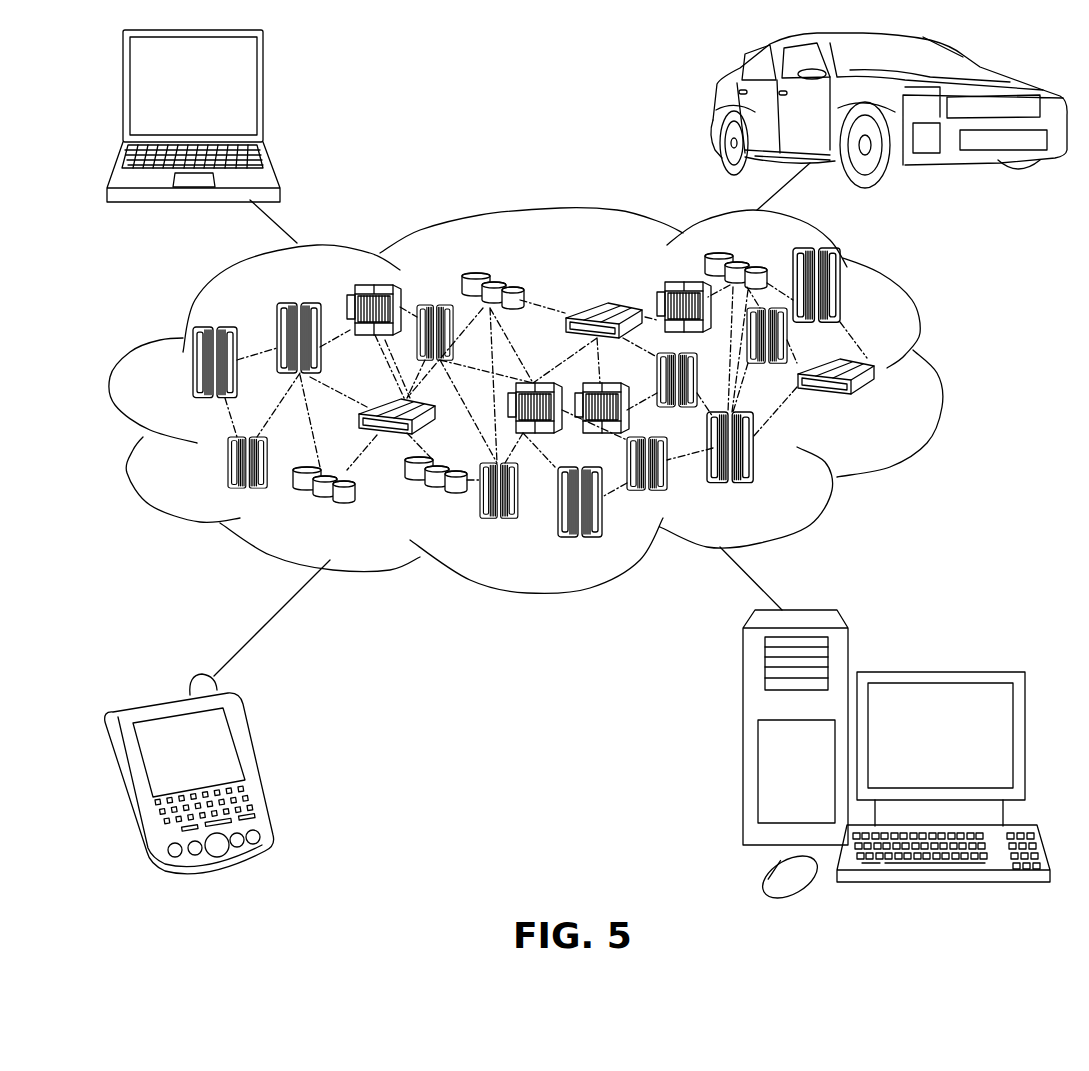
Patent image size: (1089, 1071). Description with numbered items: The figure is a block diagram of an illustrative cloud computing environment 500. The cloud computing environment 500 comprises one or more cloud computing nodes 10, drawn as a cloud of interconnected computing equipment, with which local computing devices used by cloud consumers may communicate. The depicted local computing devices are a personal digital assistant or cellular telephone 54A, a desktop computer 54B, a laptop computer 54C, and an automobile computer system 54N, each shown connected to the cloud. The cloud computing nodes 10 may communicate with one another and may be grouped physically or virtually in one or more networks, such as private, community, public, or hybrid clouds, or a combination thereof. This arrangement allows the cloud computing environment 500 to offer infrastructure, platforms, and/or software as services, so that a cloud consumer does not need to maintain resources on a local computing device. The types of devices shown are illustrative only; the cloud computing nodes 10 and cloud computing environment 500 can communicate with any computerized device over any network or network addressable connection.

The cloud computing environment 500 is at (935, 375).
The cloud computing node 10 is at (880, 405).
The personal digital assistant or cellular telephone 54A is at (255, 767).
The desktop computer 54B is at (937, 668).
The laptop computer 54C is at (266, 93).
The automobile computer system 54N is at (714, 108).